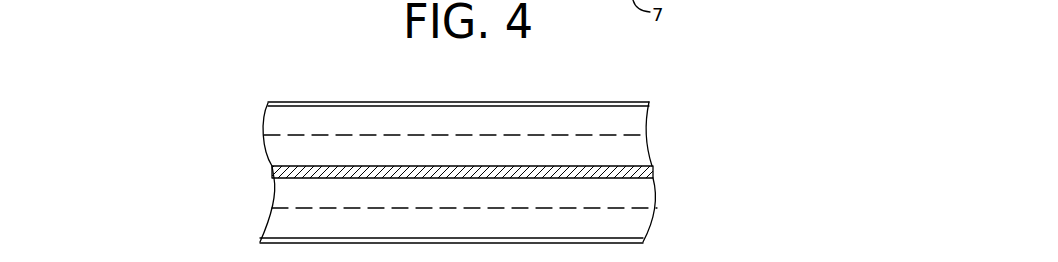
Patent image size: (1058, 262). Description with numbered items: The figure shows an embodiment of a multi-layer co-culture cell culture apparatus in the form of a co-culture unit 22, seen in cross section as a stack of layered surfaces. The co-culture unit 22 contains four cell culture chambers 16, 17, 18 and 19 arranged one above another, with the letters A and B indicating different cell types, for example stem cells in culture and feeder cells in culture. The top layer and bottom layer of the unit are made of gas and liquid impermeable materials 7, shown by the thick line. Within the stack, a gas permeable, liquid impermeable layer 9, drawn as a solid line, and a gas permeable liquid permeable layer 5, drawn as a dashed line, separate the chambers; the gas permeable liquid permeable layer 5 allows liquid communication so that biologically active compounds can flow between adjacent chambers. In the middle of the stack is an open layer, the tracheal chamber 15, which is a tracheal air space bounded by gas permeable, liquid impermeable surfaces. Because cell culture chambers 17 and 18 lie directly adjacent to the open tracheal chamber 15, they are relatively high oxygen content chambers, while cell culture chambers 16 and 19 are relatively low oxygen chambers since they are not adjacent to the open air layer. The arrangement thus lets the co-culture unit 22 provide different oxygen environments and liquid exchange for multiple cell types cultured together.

The gas permeable liquid permeable layer 5 is at (598, 208).
The gas and liquid impermeable material 7 is at (495, 102).
The gas permeable, liquid impermeable layer 9 is at (438, 170).
The tracheal chamber 15 is at (652, 171).
The cell culture chamber 16 is at (277, 123).
The cell culture chamber 17 is at (278, 152).
The cell culture chamber 18 is at (285, 192).
The cell culture chamber 19 is at (278, 225).
The co-culture unit 22 is at (688, 103).